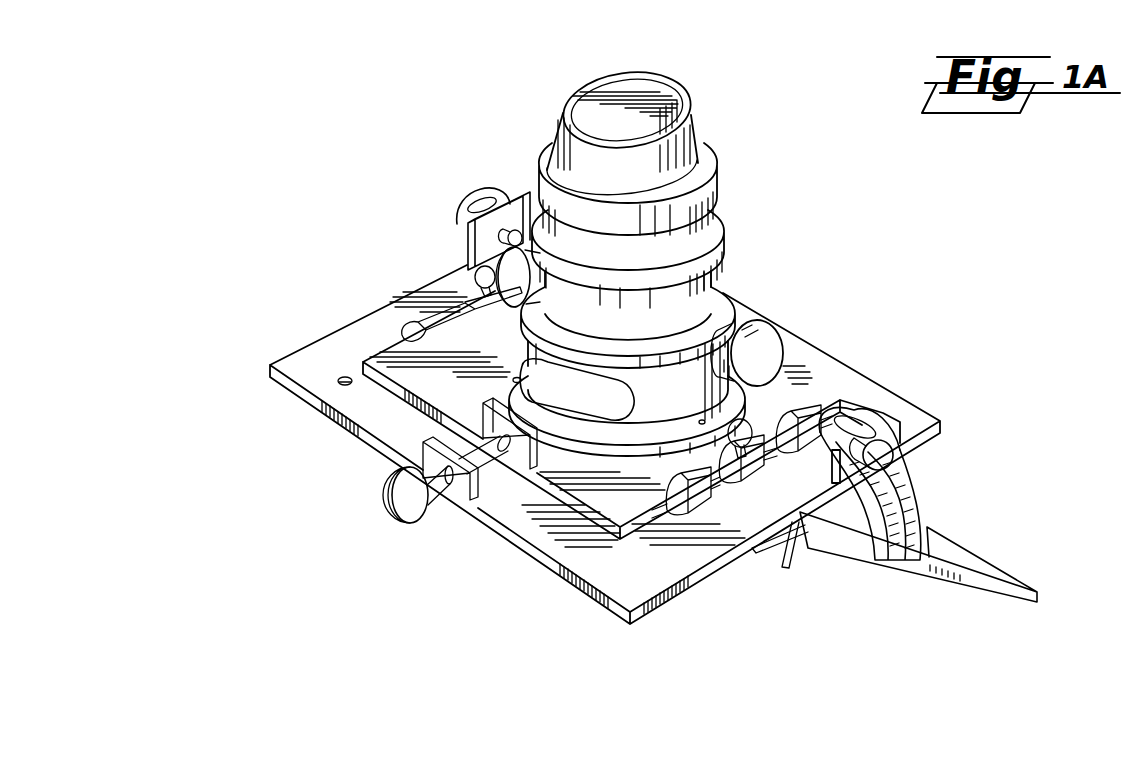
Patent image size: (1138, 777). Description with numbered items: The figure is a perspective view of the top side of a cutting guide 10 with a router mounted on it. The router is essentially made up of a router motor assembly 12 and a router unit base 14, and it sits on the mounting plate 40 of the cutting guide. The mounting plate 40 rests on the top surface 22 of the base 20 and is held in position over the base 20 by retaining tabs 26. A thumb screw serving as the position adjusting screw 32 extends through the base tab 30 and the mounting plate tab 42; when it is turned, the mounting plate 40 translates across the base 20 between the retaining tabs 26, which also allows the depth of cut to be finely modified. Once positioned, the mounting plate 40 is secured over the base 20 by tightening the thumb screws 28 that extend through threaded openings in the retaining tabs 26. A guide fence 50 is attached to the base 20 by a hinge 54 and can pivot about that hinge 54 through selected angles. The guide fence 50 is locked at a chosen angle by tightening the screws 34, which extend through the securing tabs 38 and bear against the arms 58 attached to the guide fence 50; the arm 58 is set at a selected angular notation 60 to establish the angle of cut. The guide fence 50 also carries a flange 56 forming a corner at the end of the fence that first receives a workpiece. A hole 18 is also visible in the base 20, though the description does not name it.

The cutting guide 10 is at (1021, 334).
The router motor assembly 12 is at (690, 97).
The router unit base 14 is at (718, 289).
The mounting hole 18 is at (343, 384).
The base 20 is at (537, 557).
The top surface 22 is at (590, 567).
The retaining tabs 26 is at (430, 313).
The thumb screws 28 is at (473, 270).
The base tab 30 is at (457, 492).
The position adjusting screw 32 is at (385, 500).
The screws 34 is at (514, 230).
The securing tabs 38 is at (460, 210).
The mounting plate 40 is at (817, 383).
The mounting plate tab 42 is at (508, 453).
The guide fence 50 is at (1020, 582).
The hinge 54 is at (803, 538).
The flange 56 is at (773, 562).
The arms 58 is at (478, 190).
The angular notation 60 is at (913, 517).